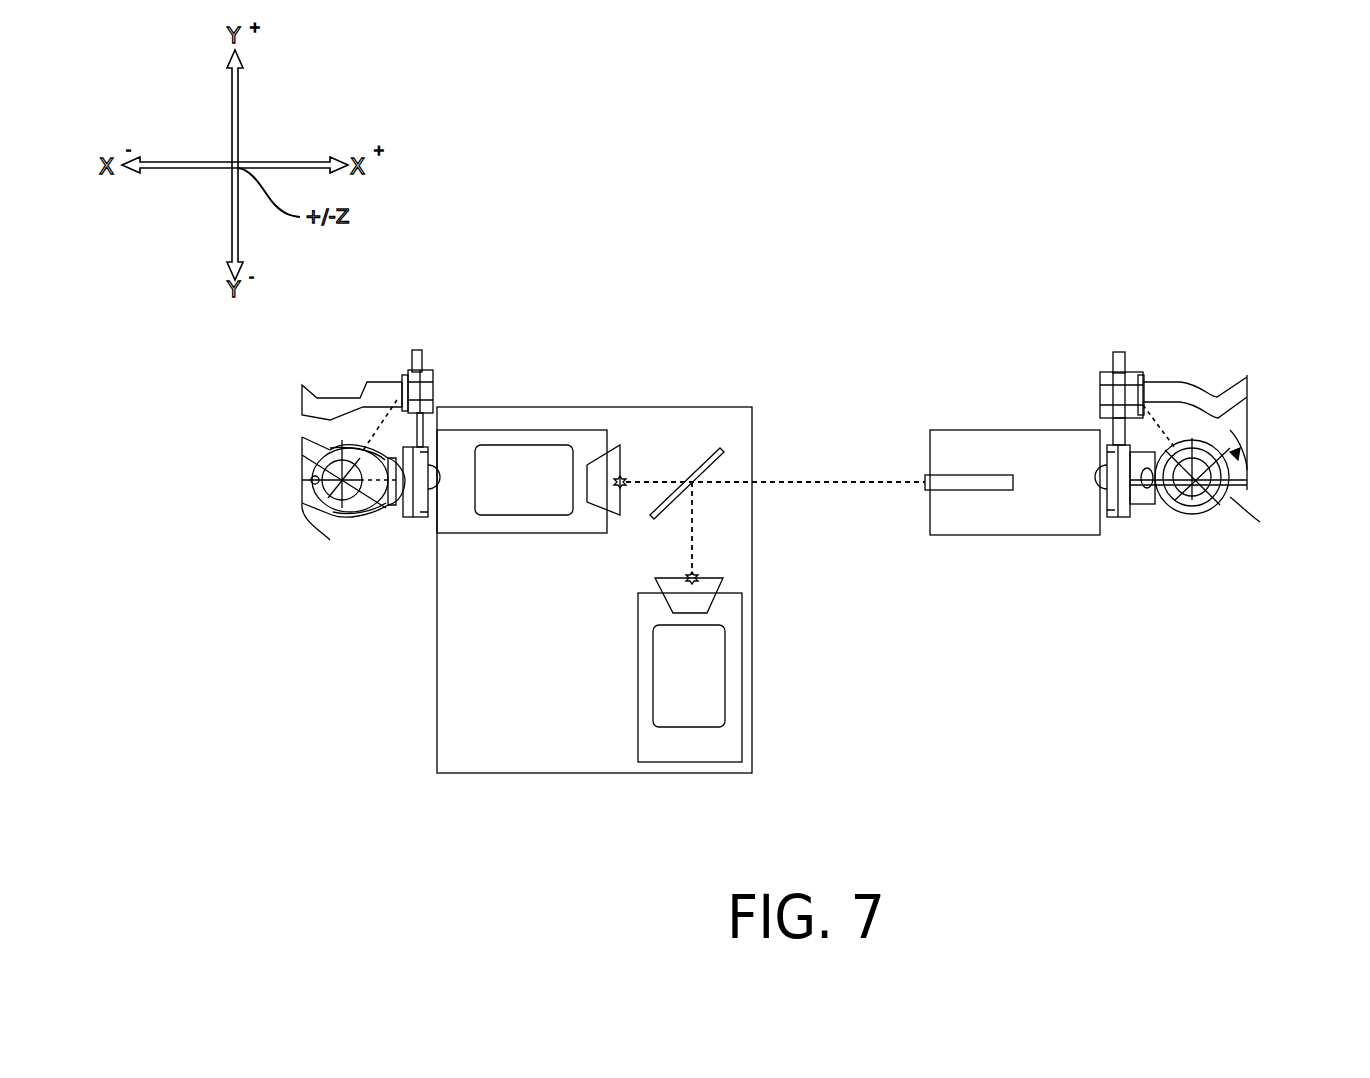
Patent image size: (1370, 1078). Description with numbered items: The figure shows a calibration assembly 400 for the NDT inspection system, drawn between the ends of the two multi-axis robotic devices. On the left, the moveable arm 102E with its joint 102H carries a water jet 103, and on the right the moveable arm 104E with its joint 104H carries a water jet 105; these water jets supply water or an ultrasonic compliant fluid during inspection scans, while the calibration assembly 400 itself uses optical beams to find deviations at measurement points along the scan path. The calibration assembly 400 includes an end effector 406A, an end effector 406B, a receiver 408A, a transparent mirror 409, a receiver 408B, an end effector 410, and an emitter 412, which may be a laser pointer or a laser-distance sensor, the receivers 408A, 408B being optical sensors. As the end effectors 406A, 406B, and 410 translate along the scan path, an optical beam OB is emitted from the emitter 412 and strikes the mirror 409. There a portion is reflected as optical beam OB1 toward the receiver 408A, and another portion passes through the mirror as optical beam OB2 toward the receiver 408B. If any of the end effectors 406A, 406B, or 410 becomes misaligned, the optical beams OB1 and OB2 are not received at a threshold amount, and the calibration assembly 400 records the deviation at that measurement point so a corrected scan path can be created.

The calibration assembly 400 is at (817, 292).
The water jet 103 is at (370, 378).
The moveable arm 102E is at (310, 500).
The joint 102H is at (338, 520).
The water jet 105 is at (1150, 380).
The moveable arm 104E is at (1230, 430).
The joint 104H is at (1230, 497).
The end effector 406A is at (503, 430).
The end effector 406B is at (745, 720).
The receiver 408A is at (612, 445).
The receiver 408B is at (712, 607).
The transparent mirror 409 is at (695, 465).
The end effector 410 is at (960, 430).
The emitter 412 is at (965, 490).
The optical beam OB is at (815, 482).
The optical beam OB1 is at (643, 482).
The optical beam OB2 is at (693, 540).